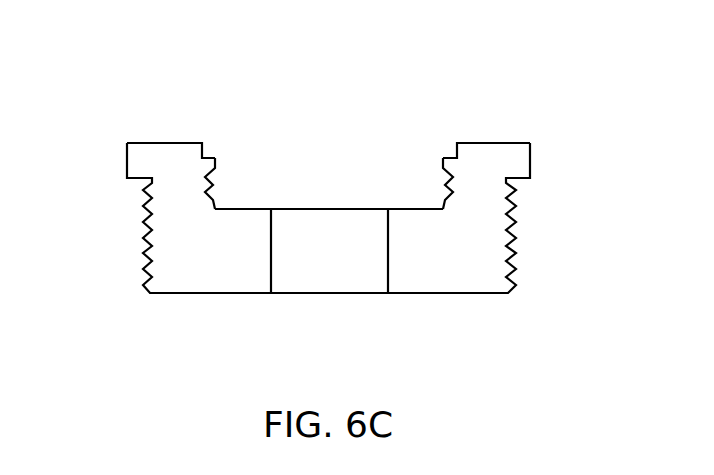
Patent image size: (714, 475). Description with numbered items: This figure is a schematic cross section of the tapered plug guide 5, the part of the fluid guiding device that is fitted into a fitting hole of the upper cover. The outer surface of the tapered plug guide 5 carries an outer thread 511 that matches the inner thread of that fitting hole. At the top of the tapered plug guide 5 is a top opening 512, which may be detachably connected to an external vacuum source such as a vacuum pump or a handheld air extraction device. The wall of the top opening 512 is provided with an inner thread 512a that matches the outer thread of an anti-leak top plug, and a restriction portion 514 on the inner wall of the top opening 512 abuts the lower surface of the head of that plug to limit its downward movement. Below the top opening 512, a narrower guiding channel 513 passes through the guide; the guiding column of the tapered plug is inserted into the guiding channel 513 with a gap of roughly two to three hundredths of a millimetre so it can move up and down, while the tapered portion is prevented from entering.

The tapered plug guide 5 is at (512, 98).
The outer thread 511 is at (143, 235).
The top opening 512 is at (330, 172).
The inner thread 512a is at (217, 174).
The guiding channel 513 is at (388, 303).
The restriction portion 514 is at (211, 157).